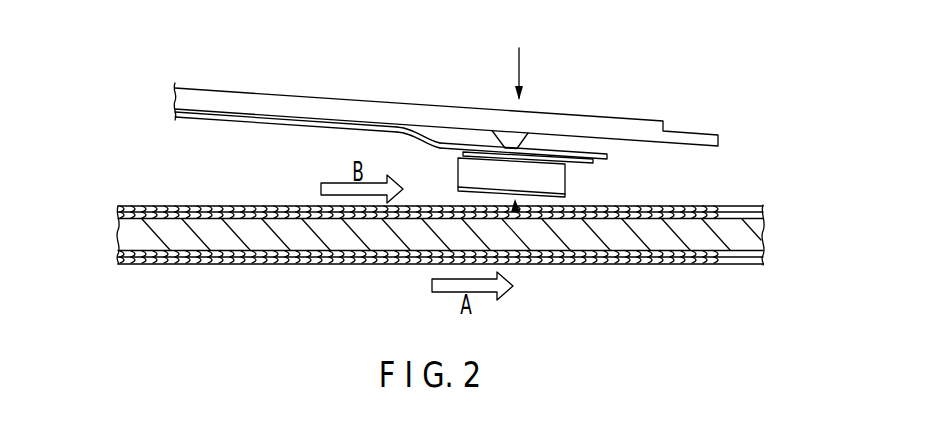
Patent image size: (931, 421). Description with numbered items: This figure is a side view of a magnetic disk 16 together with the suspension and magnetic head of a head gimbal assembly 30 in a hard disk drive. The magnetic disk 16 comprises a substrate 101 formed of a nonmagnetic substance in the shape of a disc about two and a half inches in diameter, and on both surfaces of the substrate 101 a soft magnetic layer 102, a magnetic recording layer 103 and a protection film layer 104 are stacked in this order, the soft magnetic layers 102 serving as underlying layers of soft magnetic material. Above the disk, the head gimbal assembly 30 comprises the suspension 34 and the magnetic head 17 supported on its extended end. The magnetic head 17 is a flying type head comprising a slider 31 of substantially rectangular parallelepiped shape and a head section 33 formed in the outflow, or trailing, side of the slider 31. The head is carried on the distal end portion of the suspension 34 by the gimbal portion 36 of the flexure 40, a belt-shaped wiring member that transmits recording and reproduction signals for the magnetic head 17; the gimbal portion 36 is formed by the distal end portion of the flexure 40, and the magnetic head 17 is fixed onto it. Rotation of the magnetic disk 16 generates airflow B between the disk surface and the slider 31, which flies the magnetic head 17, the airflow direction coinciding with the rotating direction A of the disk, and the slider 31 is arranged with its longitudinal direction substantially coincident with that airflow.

The magnetic disk 16 is at (156, 177).
The magnetic head 17 is at (517, 210).
The head gimbal assembly 30 is at (368, 88).
The slider 31 is at (530, 173).
The head section 33 is at (565, 180).
The suspension 34 is at (265, 104).
The gimbal portion 36 is at (448, 134).
The flexure 40 is at (228, 120).
The substrate 101 is at (214, 242).
The soft magnetic layer 102 is at (118, 225).
The magnetic recording layer 103 is at (186, 207).
The protection film layer 104 is at (133, 206).